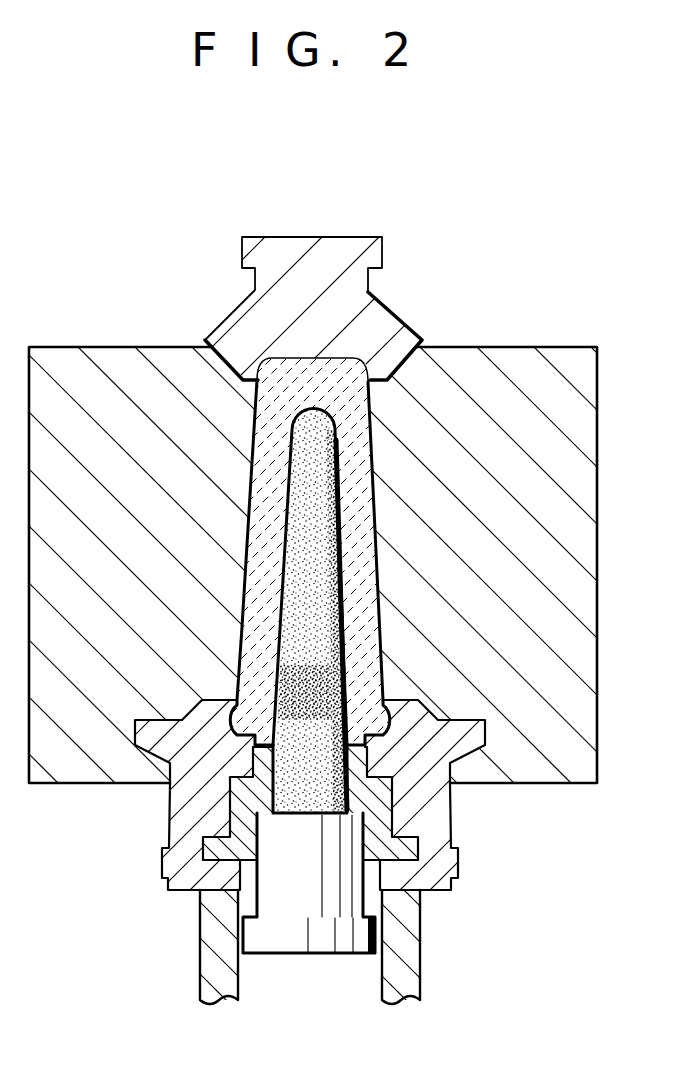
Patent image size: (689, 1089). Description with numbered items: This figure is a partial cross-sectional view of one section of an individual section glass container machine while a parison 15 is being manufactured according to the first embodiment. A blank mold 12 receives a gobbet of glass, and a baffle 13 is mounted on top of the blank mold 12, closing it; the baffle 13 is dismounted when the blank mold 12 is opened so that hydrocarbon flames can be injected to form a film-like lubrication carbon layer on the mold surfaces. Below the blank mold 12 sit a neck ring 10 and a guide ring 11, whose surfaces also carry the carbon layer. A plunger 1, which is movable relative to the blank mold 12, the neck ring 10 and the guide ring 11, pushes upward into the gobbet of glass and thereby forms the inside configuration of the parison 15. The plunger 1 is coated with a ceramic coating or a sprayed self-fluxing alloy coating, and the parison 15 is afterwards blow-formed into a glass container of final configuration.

The plunger 1 is at (287, 888).
The neck ring 10 is at (415, 807).
The guide ring 11 is at (237, 825).
The blank mold 12 is at (542, 372).
The baffle 13 is at (332, 248).
The parison 15 is at (378, 410).